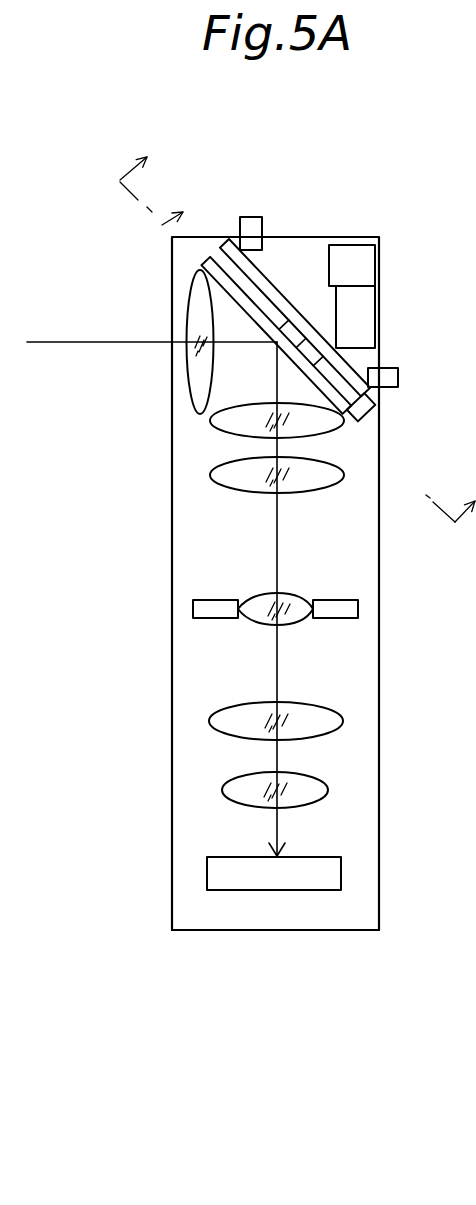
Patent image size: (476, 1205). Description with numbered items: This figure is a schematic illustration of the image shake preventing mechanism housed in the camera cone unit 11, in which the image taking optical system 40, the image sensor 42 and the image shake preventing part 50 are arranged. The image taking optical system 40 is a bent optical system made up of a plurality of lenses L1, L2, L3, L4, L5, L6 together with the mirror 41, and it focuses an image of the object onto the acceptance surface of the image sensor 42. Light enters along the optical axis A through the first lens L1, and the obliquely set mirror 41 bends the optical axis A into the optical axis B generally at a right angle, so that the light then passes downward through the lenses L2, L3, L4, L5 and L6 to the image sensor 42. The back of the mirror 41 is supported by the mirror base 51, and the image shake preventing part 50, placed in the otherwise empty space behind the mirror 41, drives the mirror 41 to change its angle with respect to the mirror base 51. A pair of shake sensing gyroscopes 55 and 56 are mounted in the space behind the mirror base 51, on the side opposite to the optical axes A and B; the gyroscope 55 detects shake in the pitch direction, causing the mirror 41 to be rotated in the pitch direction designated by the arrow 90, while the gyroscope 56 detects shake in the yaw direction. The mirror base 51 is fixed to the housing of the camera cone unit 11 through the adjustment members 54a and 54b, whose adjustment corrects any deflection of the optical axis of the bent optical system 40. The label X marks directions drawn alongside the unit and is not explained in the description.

The camera cone unit 11 is at (303, 930).
The image taking optical system 40 is at (152, 277).
The mirror 41 is at (279, 539).
The image sensor 42 is at (332, 857).
The image shake preventing part 50 is at (336, 279).
The mirror base 51 is at (365, 367).
The adjustment member 54a is at (253, 217).
The adjustment member 54b is at (398, 380).
The shake sensing gyroscope 55 is at (352, 248).
The shake sensing gyroscope 56 is at (368, 323).
The arrow 90 is at (155, 243).
The optical axis A is at (125, 340).
The optical axis B is at (277, 545).
The light direction X is at (286, 356).
The lens L1 is at (195, 372).
The lens L2 is at (245, 426).
The lens L3 is at (250, 482).
The lens L4 is at (265, 603).
The lens L5 is at (230, 715).
The lens L6 is at (240, 785).